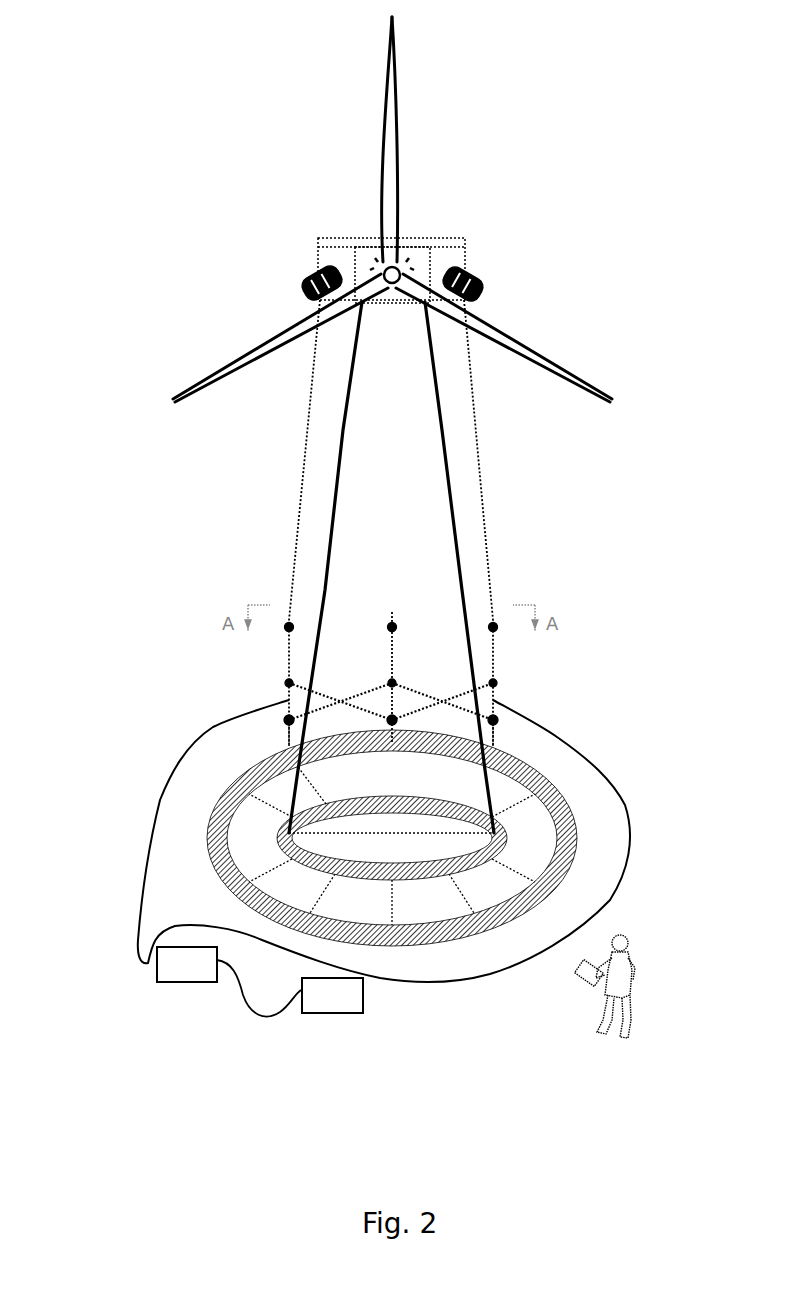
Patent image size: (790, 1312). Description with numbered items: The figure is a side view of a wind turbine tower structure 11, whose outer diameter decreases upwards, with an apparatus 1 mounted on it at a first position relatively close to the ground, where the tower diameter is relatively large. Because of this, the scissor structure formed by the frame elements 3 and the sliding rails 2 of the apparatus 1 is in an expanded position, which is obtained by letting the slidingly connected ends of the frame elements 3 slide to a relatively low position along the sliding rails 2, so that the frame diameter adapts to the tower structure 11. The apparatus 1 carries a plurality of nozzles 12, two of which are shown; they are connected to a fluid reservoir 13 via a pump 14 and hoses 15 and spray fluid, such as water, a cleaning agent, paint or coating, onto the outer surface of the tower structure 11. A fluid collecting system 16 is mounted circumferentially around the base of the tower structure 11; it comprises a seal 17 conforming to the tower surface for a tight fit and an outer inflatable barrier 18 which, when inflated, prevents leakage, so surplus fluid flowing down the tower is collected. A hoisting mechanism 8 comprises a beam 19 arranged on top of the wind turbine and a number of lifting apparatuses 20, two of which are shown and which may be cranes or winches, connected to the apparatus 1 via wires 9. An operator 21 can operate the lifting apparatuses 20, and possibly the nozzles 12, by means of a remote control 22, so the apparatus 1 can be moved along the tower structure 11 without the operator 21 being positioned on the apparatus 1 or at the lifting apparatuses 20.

The apparatus 1 is at (506, 698).
The sliding rails 2 is at (283, 645).
The frame elements 3 is at (363, 707).
The hoisting mechanism 8 is at (492, 240).
The wires 9 is at (305, 383).
The tower structure 11 is at (415, 510).
The nozzles 12 is at (290, 700).
The fluid reservoir 13 is at (333, 1013).
The pump 14 is at (185, 982).
The hoses 15 is at (152, 833).
The fluid collecting system 16 is at (525, 828).
The seal 17 is at (290, 833).
The outer inflatable barrier 18 is at (568, 845).
The beam 19 is at (425, 238).
The lifting apparatuses 20 is at (308, 278).
The operator 21 is at (640, 975).
The remote control 22 is at (590, 975).